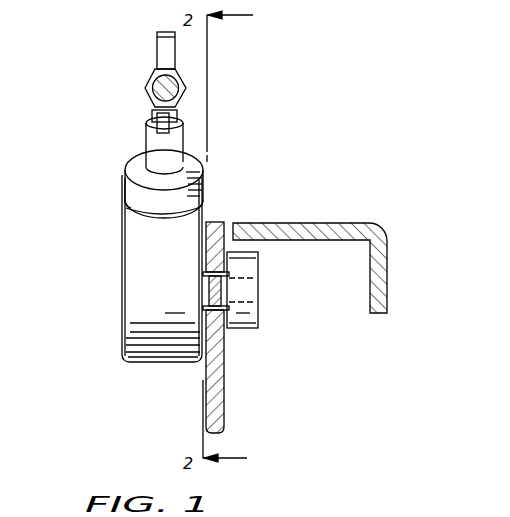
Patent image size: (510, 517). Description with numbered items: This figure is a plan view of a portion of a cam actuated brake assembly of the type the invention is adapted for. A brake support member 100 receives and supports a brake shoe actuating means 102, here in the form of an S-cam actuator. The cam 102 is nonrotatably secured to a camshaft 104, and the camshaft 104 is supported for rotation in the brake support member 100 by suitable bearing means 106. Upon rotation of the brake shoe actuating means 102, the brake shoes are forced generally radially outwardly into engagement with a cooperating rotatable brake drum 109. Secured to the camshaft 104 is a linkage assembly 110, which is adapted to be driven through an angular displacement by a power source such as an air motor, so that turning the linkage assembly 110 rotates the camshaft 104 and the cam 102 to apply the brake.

The brake support member 100 is at (215, 404).
The brake shoe actuating means 102 is at (252, 318).
The camshaft 104 is at (226, 290).
The bearing means 106 is at (220, 222).
The brake drum 109 is at (317, 222).
The linkage assembly 110 is at (112, 234).